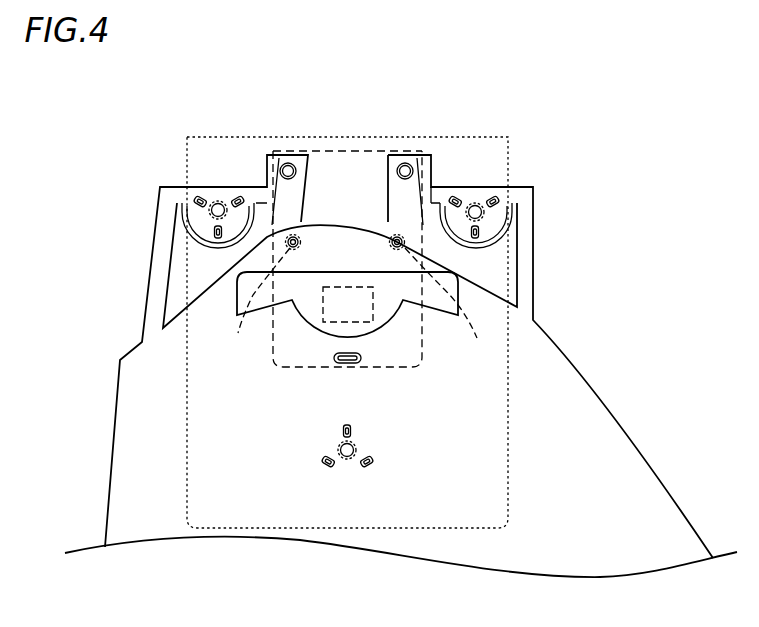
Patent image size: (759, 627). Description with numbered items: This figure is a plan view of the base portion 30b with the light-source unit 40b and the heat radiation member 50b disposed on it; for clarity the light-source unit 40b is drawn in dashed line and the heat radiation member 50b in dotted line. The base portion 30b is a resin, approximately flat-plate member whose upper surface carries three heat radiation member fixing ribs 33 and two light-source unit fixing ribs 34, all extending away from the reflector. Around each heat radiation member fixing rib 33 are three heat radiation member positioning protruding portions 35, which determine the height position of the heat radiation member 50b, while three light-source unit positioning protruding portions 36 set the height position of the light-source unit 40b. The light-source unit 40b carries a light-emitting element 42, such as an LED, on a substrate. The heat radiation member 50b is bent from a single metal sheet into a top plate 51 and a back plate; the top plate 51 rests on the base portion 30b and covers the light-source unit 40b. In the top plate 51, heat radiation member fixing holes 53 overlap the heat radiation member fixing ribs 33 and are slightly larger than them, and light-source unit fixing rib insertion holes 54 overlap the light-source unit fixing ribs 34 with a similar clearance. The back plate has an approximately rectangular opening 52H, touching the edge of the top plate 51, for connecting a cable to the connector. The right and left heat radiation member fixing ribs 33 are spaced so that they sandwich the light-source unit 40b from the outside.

The base portion 30b is at (580, 362).
The heat radiation member fixing rib 33 is at (216, 201).
The light-source unit fixing rib 34 is at (292, 234).
The heat radiation member positioning protruding portion 35 is at (198, 199).
The light-source unit positioning protruding portion 36 is at (288, 163).
The light-source unit 40b is at (272, 367).
The light-emitting element 42 is at (386, 326).
The heat radiation member 50b is at (510, 442).
The top plate 51 is at (218, 520).
The opening 52H is at (344, 137).
The heat radiation member fixing hole 53 is at (208, 213).
The light-source unit fixing rib insertion hole 54 is at (356, 306).